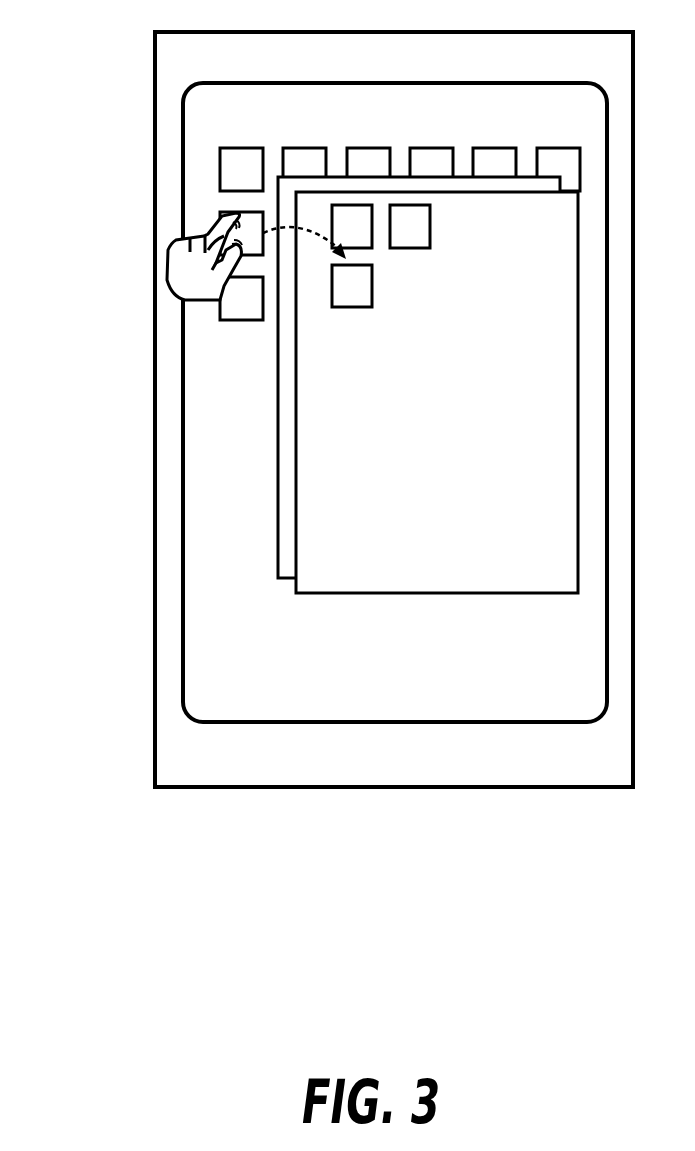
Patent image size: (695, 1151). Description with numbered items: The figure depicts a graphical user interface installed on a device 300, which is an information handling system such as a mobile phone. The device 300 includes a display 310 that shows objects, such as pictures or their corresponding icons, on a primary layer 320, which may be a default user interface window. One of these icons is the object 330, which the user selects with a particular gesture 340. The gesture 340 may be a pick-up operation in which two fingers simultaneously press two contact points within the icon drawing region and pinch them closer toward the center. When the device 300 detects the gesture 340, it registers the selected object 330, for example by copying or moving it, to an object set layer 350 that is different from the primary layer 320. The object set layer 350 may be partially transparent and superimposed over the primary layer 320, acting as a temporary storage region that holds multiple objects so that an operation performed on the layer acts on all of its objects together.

The device 300 is at (445, 69).
The display 310 is at (447, 119).
The primary layer 320 is at (305, 162).
The object 330 is at (162, 183).
The gesture 340 is at (190, 282).
The object set layer 350 is at (454, 420).